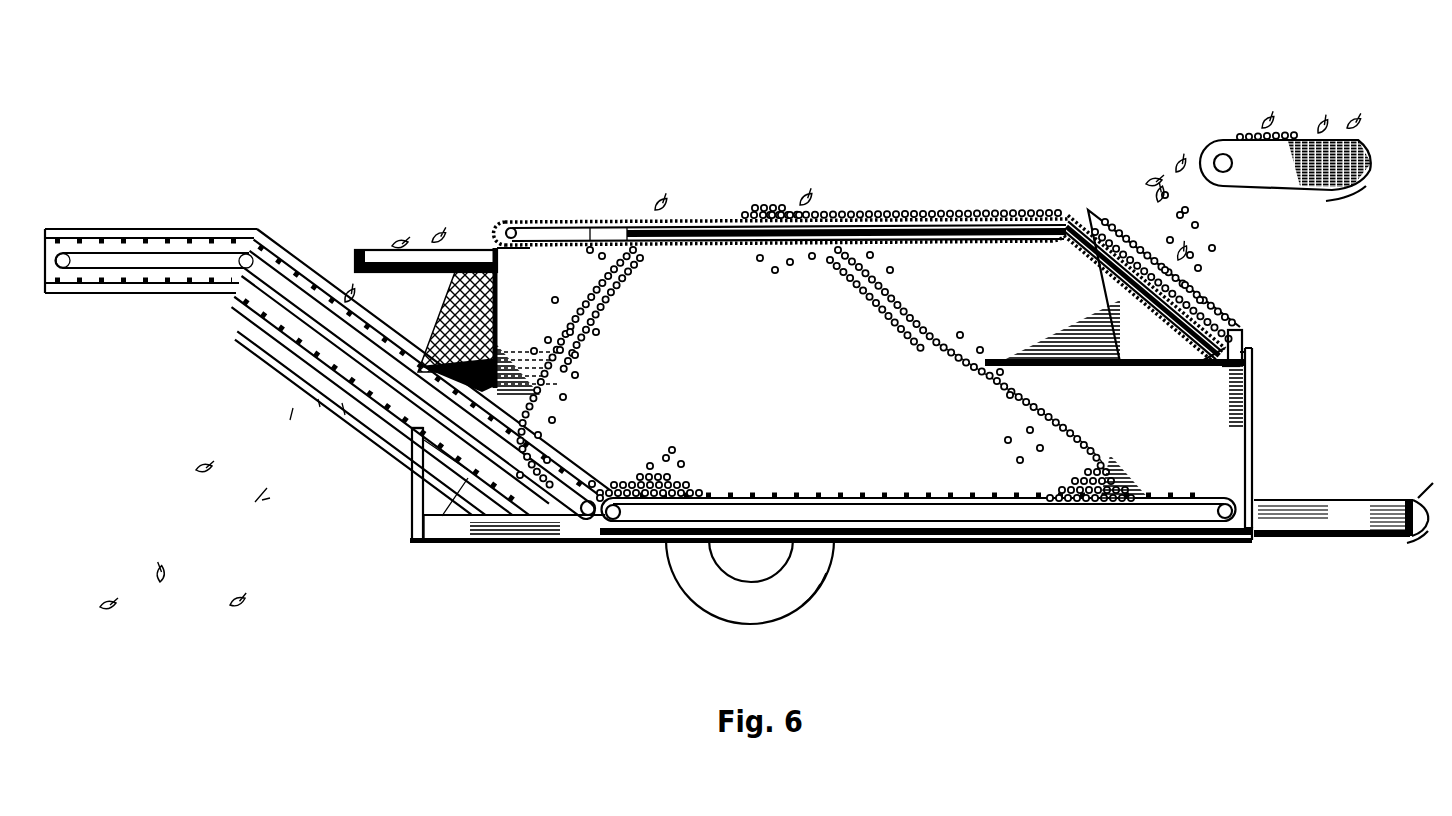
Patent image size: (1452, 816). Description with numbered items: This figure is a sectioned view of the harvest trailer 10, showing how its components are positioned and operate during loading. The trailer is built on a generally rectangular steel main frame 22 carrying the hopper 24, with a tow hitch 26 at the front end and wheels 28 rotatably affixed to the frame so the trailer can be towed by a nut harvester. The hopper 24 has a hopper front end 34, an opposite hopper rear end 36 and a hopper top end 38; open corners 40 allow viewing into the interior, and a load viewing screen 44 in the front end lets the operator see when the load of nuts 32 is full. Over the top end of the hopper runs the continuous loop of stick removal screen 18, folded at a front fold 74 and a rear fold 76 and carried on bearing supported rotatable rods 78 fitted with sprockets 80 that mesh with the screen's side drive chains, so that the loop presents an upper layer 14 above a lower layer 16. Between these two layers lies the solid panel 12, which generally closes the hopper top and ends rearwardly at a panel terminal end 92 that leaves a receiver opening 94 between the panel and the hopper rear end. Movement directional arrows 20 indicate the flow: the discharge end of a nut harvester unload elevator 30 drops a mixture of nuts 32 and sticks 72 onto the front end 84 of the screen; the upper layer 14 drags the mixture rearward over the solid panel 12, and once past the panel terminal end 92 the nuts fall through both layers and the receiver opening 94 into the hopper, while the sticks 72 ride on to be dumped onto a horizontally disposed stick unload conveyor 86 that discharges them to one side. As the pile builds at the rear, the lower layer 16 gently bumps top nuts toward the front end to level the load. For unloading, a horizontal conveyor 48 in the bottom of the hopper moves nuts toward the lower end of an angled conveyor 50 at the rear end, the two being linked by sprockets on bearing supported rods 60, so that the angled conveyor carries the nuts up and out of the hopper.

The harvest trailer 10 is at (887, 551).
The solid panel 12 is at (803, 224).
The upper layer 14 is at (987, 218).
The lower layer 16 is at (1012, 244).
The stick removal screen 18 is at (1077, 214).
The movement directional arrows 20 is at (430, 185).
The main frame 22 is at (457, 527).
The hopper 24 is at (1193, 466).
The tow hitch 26 is at (1340, 498).
The wheels 28 is at (783, 612).
The nut harvester unload elevator 30 is at (1300, 190).
The nuts 32 is at (1056, 217).
The hopper front end 34 is at (1257, 486).
The hopper rear end 36 is at (410, 432).
The hopper top end 38 is at (767, 205).
The open corners 40 is at (1160, 343).
The load viewing screen 44 is at (1254, 390).
The horizontal conveyor 48 is at (998, 506).
The angled conveyor 50 is at (302, 296).
The rods 60 is at (606, 537).
The sticks 72 is at (402, 242).
The front fold 74 is at (1250, 348).
The rear fold 76 is at (512, 226).
The rods 78 is at (1222, 366).
The sprockets 80 is at (530, 247).
The front end 84 is at (1240, 330).
The stick unload conveyor 86 is at (362, 250).
The panel terminal end 92 is at (630, 263).
The receiver opening 94 is at (603, 225).